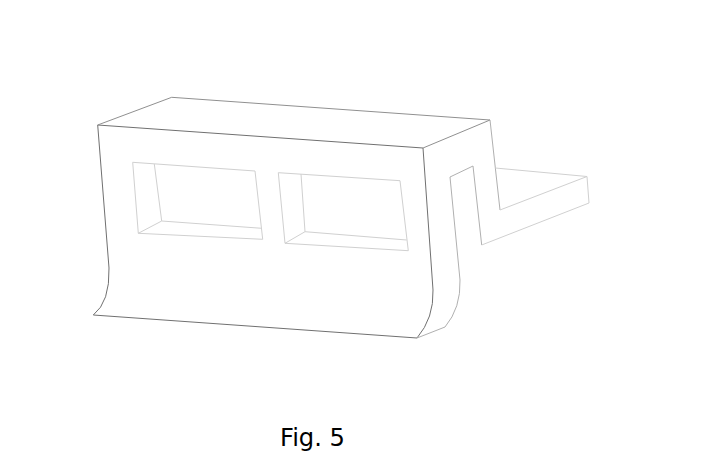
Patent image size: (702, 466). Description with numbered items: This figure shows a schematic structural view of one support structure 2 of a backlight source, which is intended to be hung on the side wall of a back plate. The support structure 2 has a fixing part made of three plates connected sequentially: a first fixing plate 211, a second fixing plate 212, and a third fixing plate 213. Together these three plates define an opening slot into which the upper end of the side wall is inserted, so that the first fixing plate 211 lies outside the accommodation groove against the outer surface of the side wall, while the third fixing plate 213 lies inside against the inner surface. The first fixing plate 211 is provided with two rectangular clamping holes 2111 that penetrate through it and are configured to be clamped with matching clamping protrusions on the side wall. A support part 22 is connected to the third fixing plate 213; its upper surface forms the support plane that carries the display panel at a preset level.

The support structure 2 is at (308, 74).
The first fixing plate 211 is at (127, 283).
The second fixing plate 212 is at (194, 120).
The third fixing plate 213 is at (483, 179).
The clamping hole 2111 is at (322, 217).
The support part 22 is at (548, 207).